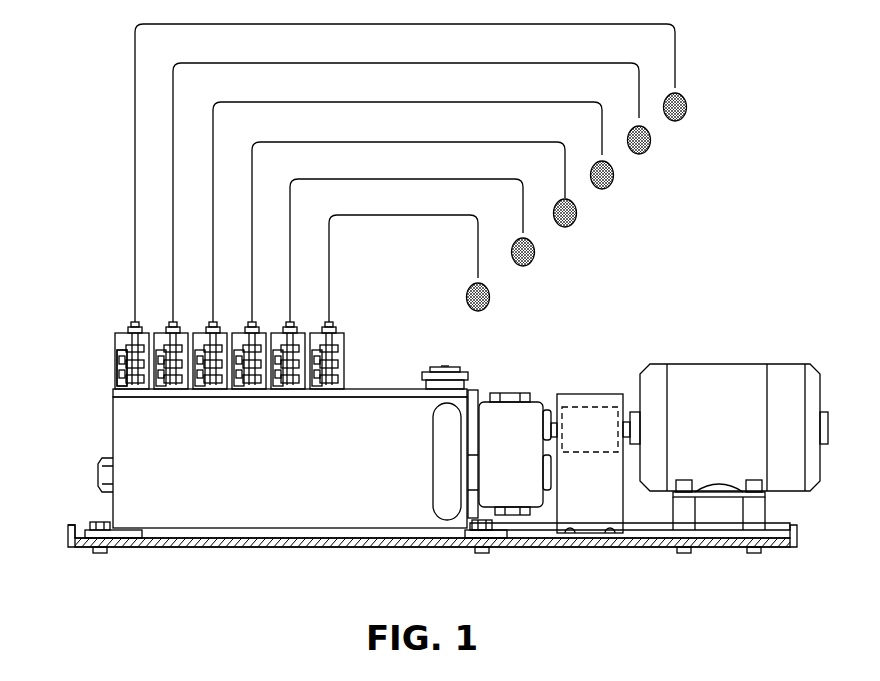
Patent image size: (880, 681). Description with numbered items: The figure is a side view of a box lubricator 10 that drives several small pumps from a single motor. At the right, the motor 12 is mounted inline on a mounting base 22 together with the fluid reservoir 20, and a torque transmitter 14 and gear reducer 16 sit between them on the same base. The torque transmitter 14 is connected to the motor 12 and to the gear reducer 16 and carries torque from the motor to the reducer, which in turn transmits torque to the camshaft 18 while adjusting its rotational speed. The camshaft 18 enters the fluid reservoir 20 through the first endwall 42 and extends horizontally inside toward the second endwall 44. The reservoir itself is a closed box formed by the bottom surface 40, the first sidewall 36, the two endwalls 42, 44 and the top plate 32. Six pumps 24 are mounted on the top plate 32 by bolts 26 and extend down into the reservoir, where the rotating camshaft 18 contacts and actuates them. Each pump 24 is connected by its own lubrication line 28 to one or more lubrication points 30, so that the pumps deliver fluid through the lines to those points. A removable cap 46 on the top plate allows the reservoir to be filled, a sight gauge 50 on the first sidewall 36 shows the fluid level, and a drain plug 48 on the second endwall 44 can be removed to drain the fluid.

The box lubricator 10 is at (90, 274).
The motor 12 is at (710, 378).
The torque transmitter 14 is at (585, 394).
The gear reducer 16 is at (533, 401).
The camshaft 18 is at (473, 465).
The fluid reservoir 20 is at (128, 430).
The mounting base 22 is at (266, 548).
The pumps 24 is at (122, 334).
The bolts 26 is at (124, 380).
The lubrication lines 28 is at (173, 107).
The lubrication points 30 is at (648, 146).
The top plate 32 is at (112, 390).
The first sidewall 36 is at (135, 512).
The bottom surface 40 is at (189, 534).
The first endwall 42 is at (470, 515).
The second endwall 44 is at (100, 508).
The cap 46 is at (448, 368).
The drain plug 48 is at (98, 476).
The sight gauge 50 is at (440, 478).